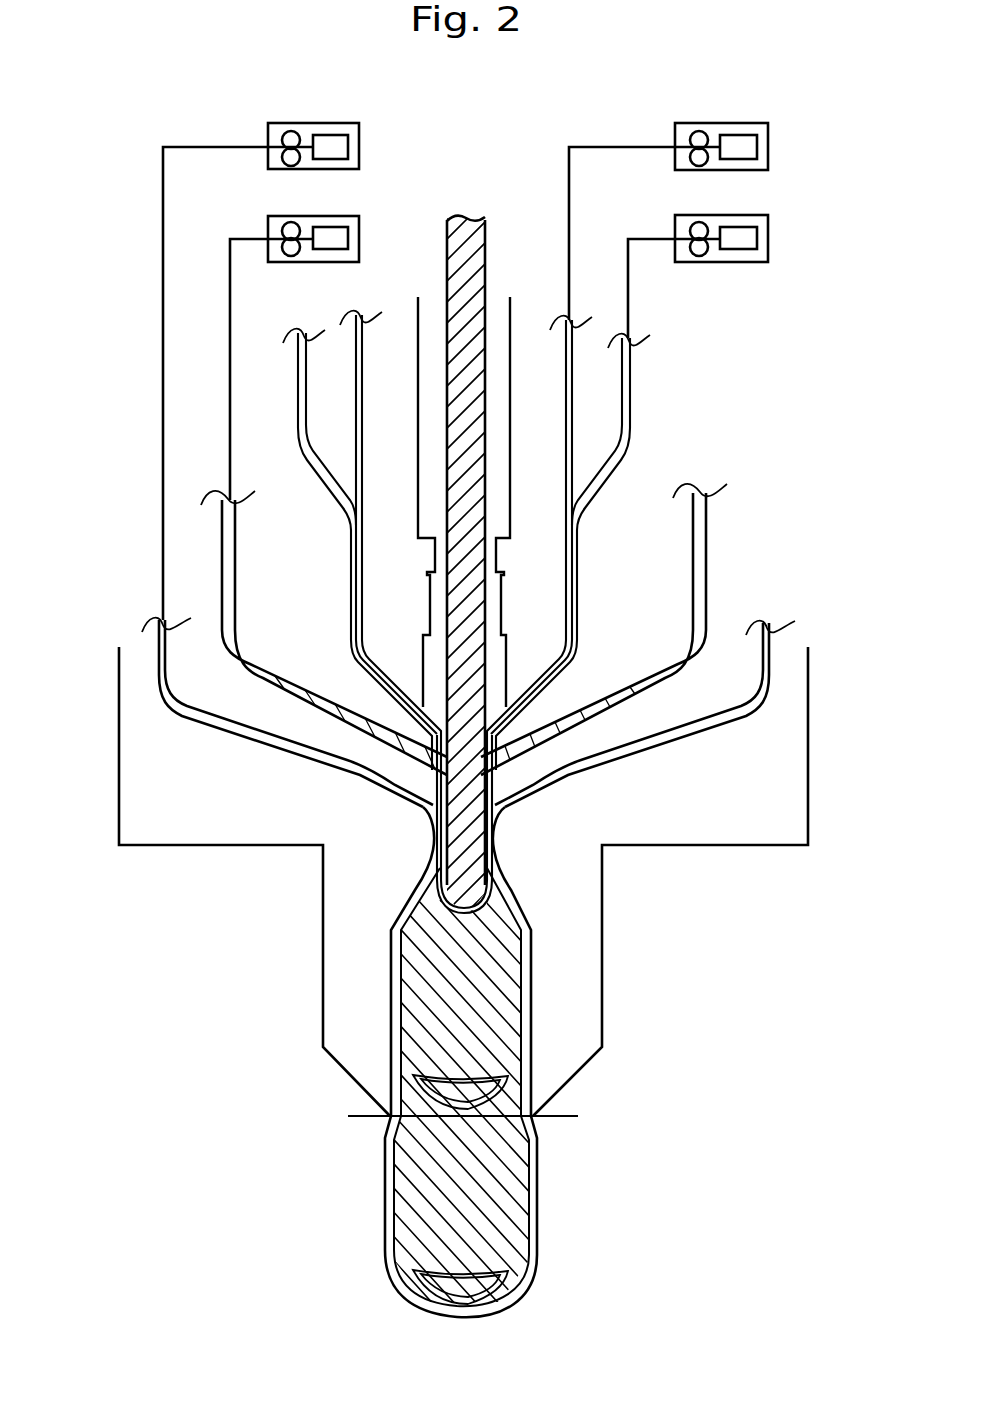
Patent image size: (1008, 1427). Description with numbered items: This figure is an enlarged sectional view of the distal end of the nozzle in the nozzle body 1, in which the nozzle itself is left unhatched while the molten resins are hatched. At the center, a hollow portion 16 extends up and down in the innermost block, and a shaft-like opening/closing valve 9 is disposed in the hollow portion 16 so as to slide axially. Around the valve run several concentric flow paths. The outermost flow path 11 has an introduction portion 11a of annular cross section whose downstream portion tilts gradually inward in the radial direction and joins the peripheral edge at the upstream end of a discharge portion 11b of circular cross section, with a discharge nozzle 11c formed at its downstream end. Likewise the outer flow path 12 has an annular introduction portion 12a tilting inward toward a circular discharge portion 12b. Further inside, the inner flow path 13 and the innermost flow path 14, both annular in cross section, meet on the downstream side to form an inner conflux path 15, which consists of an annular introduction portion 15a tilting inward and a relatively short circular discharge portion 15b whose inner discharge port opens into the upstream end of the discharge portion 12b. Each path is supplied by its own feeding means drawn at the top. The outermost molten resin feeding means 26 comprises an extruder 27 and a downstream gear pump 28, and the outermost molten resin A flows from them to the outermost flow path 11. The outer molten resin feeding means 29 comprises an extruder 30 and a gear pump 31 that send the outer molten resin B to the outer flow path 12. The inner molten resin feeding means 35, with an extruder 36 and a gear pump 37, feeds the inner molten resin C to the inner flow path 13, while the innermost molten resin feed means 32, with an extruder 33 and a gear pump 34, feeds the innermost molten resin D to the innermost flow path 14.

The nozzle body 1 is at (126, 300).
The opening/closing valve 9 is at (488, 239).
The outermost flow path 11 is at (195, 723).
The introduction portion 11a is at (283, 740).
The discharge portion 11b is at (495, 826).
The discharge nozzle 11c is at (534, 1114).
The outer flow path 12 is at (236, 573).
The introduction portion 12a is at (296, 686).
The discharge portion 12b is at (514, 794).
The inner flow path 13 is at (633, 362).
The innermost flow path 14 is at (574, 388).
The inner conflux path 15 is at (397, 712).
The introduction portion 15a is at (578, 596).
The discharge portion 15b is at (492, 750).
The hollow portion 16 is at (500, 456).
The outermost molten resin feeding means 26 is at (368, 139).
The extruder 27 is at (329, 133).
The gear pump 28 is at (290, 131).
The outer molten resin feeding means 29 is at (368, 232).
The extruder 30 is at (330, 224).
The gear pump 31 is at (290, 222).
The innermost molten resin feed means 32 is at (782, 124).
The extruder 33 is at (740, 133).
The gear pump 34 is at (695, 131).
The inner molten resin feeding means 35 is at (782, 230).
The extruder 36 is at (740, 224).
The gear pump 37 is at (695, 222).
The outermost molten resin A is at (160, 407).
The outer molten resin B is at (228, 378).
The inner molten resin C is at (630, 278).
The innermost molten resin D is at (567, 180).